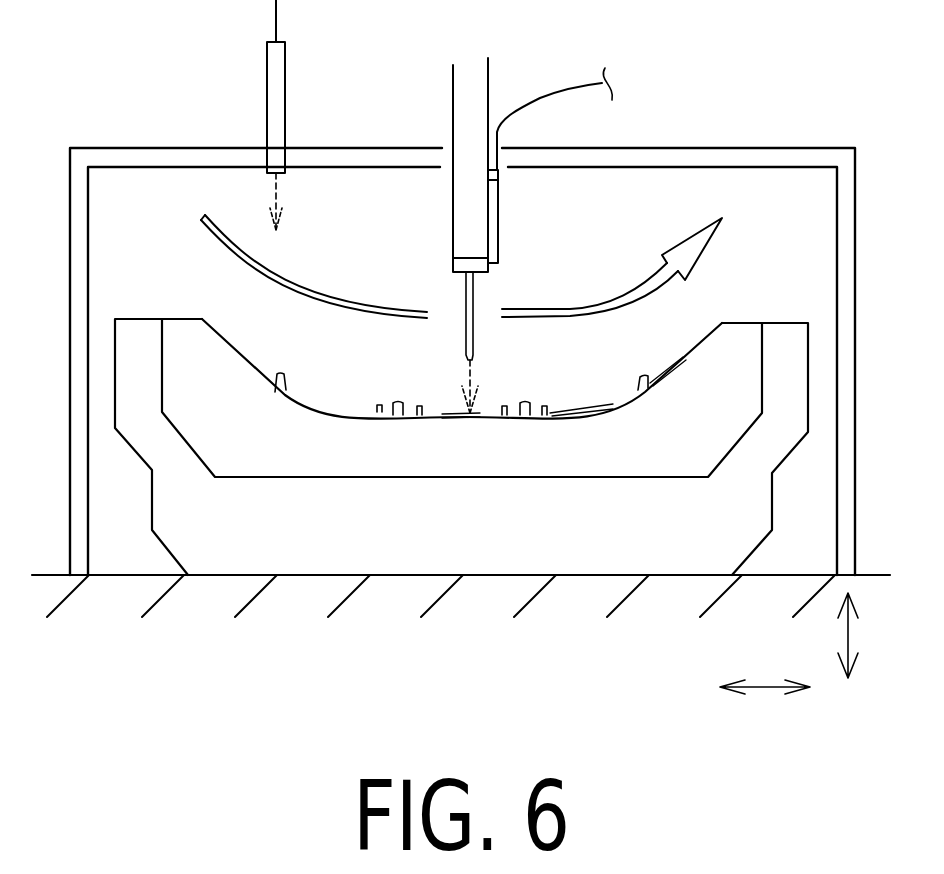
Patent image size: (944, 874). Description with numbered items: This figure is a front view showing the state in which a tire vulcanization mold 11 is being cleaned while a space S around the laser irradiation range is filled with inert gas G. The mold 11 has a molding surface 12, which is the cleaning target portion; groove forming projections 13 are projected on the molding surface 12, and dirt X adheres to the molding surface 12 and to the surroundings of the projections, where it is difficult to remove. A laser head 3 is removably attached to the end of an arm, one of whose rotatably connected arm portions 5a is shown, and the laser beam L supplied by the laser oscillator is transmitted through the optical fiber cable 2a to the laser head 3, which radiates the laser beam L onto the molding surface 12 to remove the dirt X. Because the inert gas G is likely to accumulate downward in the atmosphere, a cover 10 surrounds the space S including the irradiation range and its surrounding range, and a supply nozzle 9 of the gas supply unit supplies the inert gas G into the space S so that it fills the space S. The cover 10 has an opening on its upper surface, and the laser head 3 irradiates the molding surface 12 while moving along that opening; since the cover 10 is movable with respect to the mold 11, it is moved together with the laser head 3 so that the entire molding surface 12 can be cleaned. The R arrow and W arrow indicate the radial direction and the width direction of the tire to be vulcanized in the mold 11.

The supply nozzle 9 is at (270, 70).
The inert gas G is at (280, 205).
The arm portion 5a is at (481, 100).
The optical fiber cable 2a is at (563, 97).
The laser head 3 is at (480, 302).
The laser beam L is at (465, 378).
The space S is at (400, 215).
The cover 10 is at (737, 158).
The tire vulcanization mold 11 is at (185, 318).
The molding surface 12 is at (240, 355).
The groove forming projections 13 is at (378, 405).
The dirt X is at (580, 410).
The R arrow R is at (859, 635).
The W arrow W is at (765, 672).